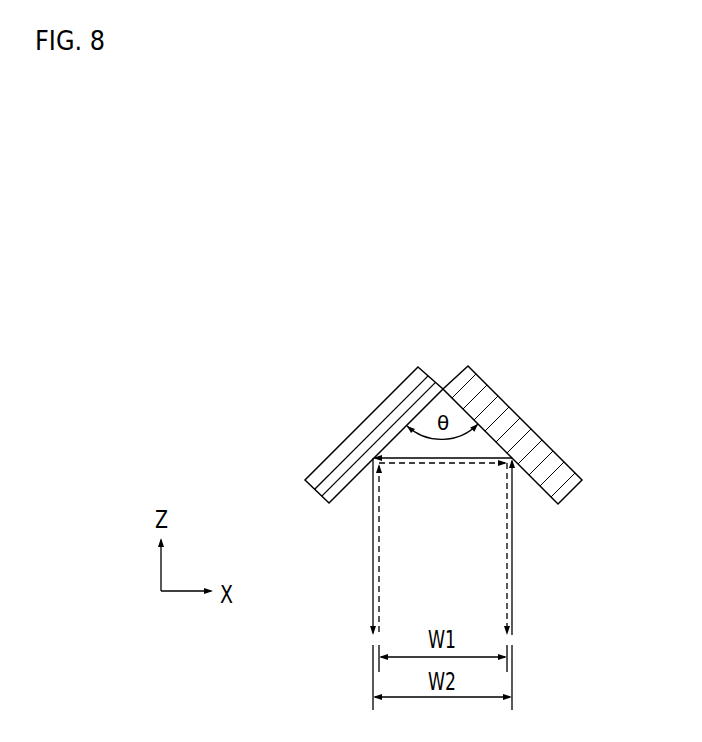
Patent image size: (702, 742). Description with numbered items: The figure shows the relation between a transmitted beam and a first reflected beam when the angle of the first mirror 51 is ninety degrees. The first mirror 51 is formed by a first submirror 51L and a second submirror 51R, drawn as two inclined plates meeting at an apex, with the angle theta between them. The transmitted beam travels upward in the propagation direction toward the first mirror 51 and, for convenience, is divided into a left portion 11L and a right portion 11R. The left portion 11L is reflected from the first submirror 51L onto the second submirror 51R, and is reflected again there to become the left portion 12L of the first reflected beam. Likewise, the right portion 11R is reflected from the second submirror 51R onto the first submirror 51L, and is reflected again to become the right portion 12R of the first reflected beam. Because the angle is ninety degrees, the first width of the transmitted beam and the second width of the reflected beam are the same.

The first mirror 51 is at (443, 380).
The first submirror 51L is at (411, 372).
The second submirror 51R is at (463, 367).
The left portion of the transmitted beam 11L is at (379, 587).
The right portion of the transmitted beam 11R is at (512, 567).
The left portion of the first reflected beam 12L is at (507, 602).
The right portion of the first reflected beam 12R is at (373, 553).